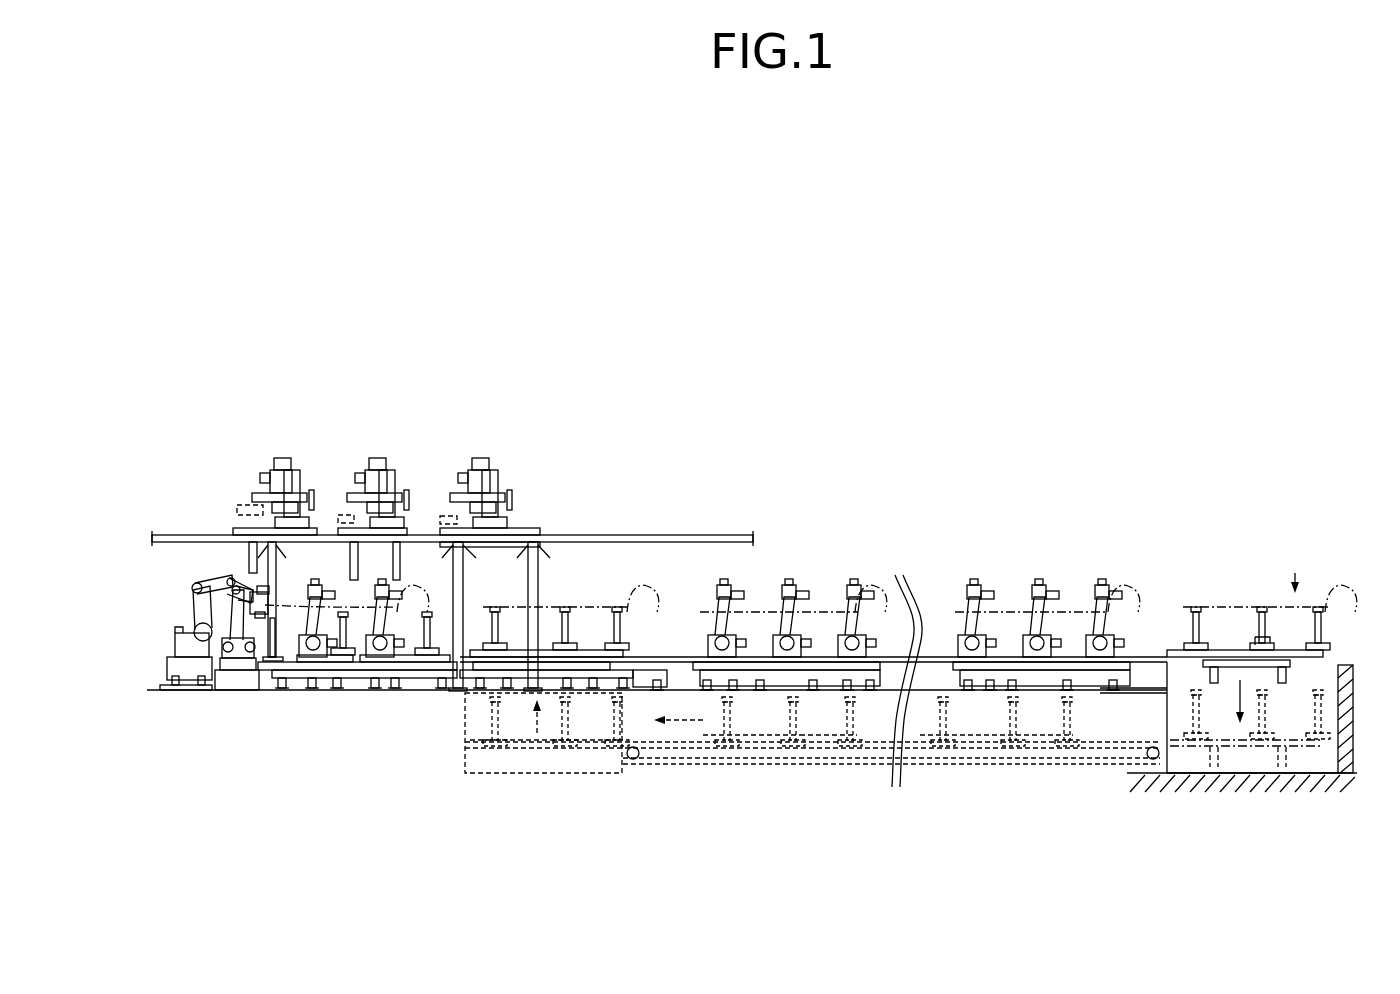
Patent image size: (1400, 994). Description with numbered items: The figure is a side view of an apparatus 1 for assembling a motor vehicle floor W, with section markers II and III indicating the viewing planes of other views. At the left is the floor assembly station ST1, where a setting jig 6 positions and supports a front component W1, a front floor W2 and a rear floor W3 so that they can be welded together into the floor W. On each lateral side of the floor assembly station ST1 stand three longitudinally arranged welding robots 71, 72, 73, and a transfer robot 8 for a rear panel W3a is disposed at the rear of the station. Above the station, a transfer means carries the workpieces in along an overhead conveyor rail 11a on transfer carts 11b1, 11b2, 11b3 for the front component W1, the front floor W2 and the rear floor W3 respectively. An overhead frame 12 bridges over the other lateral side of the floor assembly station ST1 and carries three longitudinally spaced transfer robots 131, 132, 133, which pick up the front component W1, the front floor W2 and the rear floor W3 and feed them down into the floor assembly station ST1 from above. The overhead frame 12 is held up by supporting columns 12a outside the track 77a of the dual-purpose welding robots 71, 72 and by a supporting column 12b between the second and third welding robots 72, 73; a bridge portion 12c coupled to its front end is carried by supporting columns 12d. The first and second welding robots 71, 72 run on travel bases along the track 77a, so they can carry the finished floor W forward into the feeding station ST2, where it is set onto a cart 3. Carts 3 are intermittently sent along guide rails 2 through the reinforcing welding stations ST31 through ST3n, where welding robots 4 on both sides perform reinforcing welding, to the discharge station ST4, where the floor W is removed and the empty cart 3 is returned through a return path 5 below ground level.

The apparatus for assembling a floor 1 is at (870, 330).
The guide rails 2 is at (933, 653).
The cart 3 is at (595, 655).
The welding robot 4 is at (722, 592).
The return path 5 is at (806, 768).
The setting jig 6 is at (358, 692).
The first welding robot 71 is at (369, 692).
The second welding robot 72 is at (322, 692).
The third welding robot 73 is at (240, 692).
The transfer robot 8 is at (182, 692).
The overhead conveyor rail 11a is at (668, 538).
The transfer cart 11b1 is at (530, 540).
The transfer cart 11b2 is at (354, 580).
The transfer cart 11b3 is at (262, 590).
The overhead frame 12 is at (428, 530).
The supporting columns 12a is at (268, 640).
The supporting column 12b is at (303, 692).
The bridge portion 12c is at (567, 540).
The supporting columns 12d is at (534, 690).
The transfer robot 131 is at (483, 470).
The transfer robot 132 is at (374, 508).
The transfer robot 133 is at (262, 580).
The track 77a is at (425, 695).
The floor W is at (636, 586).
The front component W1 is at (490, 512).
The front floor W2 is at (396, 548).
The rear floor W3 is at (242, 572).
The rear panel W3a is at (262, 600).
The floor assembly station ST1 is at (350, 386).
The feeding station ST2 is at (572, 386).
The reinforcing welding station ST31 is at (784, 386).
The reinforcing welding station ST3n is at (1033, 386).
The discharge station ST4 is at (1247, 386).
The section II is at (140, 553).
The section III is at (254, 435).